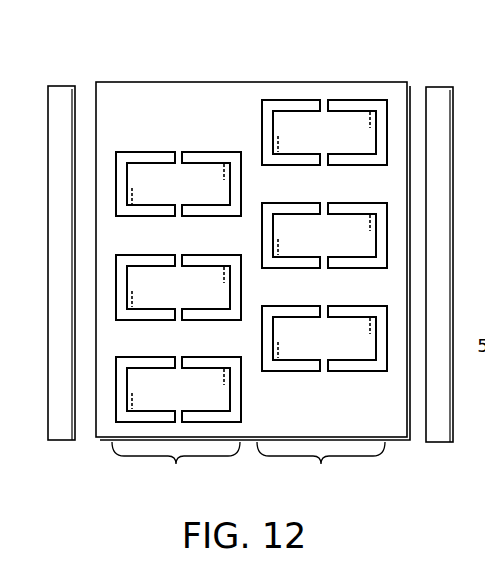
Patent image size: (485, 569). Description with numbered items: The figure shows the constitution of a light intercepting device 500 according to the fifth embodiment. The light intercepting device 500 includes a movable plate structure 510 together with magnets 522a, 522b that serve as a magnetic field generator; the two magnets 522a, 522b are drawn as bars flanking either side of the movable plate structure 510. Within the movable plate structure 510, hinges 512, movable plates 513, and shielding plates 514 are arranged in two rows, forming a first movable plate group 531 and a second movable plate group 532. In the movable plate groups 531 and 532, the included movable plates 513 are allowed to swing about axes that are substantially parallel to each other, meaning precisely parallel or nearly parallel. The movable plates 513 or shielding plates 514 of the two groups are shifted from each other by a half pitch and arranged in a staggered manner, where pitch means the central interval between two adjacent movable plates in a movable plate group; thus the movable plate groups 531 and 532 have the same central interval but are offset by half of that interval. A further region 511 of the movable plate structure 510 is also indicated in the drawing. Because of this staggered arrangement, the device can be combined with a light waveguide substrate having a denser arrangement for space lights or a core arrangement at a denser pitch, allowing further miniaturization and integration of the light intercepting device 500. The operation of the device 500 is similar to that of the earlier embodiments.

The light intercepting device 500 is at (116, 78).
The movable plate structure 510 is at (150, 82).
The dielectric layer 511 is at (216, 112).
The hinge 512 is at (321, 102).
The movable plate 513 is at (317, 135).
The shielding plate 514 is at (376, 98).
The magnet 522a is at (61, 86).
The magnet 522b is at (443, 87).
The first movable plate group 531 is at (176, 324).
The second movable plate group 532 is at (322, 264).